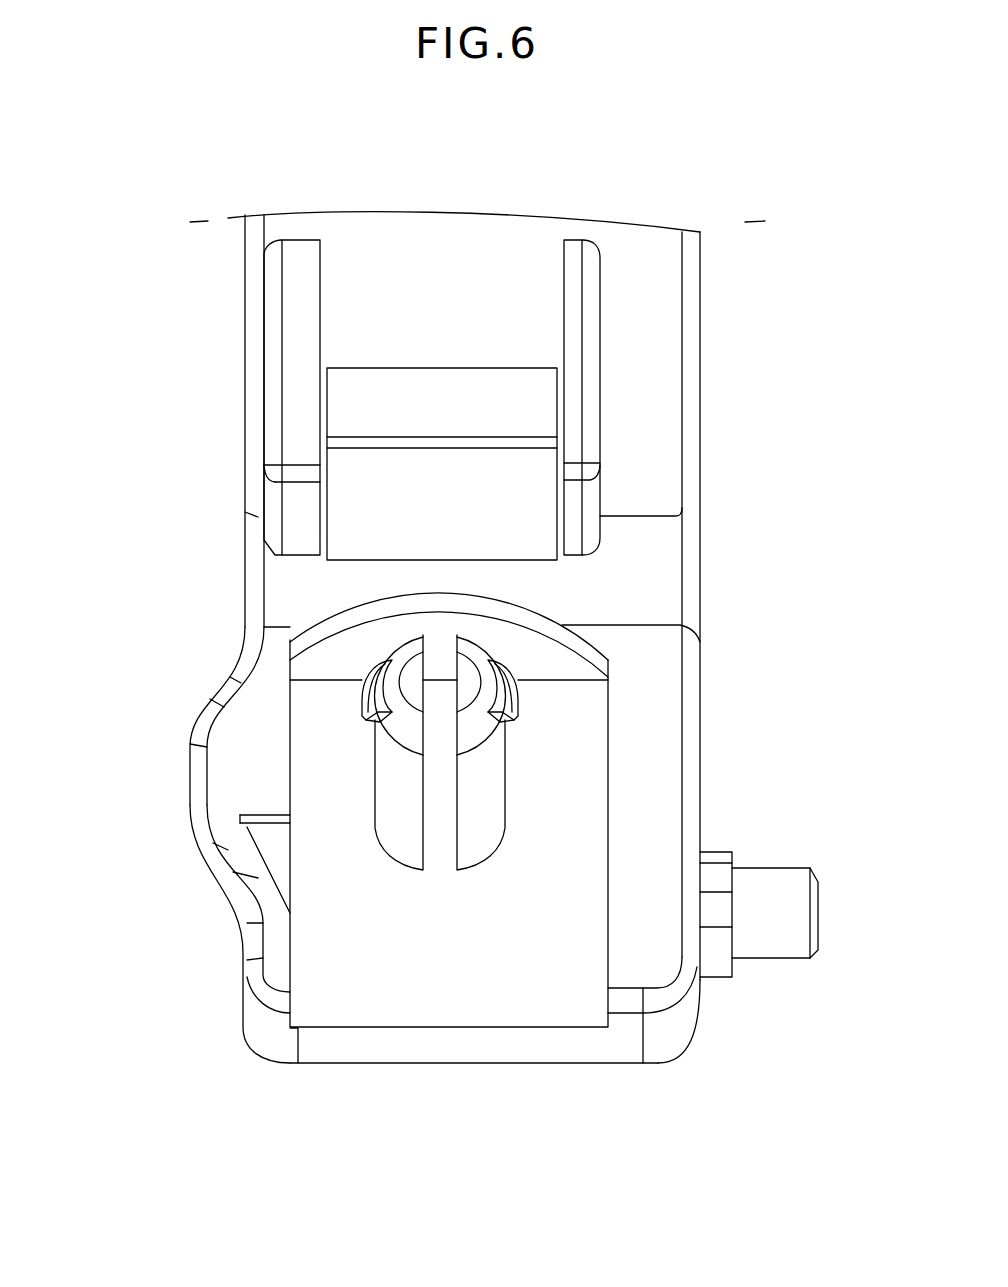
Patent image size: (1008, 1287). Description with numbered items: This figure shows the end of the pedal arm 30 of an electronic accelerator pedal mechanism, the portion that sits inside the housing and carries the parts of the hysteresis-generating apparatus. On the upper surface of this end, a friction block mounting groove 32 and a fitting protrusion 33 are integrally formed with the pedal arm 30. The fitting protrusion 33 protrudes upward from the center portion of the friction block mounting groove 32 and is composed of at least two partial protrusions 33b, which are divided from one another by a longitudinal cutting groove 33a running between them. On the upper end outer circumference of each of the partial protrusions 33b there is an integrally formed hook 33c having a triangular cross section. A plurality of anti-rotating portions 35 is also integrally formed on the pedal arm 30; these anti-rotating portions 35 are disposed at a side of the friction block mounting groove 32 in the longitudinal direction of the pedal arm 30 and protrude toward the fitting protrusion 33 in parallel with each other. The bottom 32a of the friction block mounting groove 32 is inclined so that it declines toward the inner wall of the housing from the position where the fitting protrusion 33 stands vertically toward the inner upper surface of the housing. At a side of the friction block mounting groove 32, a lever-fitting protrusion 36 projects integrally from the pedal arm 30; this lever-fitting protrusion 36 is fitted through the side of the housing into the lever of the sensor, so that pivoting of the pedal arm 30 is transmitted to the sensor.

The pedal arm 30 is at (727, 387).
The friction block mounting groove 32 is at (354, 874).
The bottom of friction block mounting groove 32a is at (343, 940).
The fitting protrusion 33 is at (464, 926).
The longitudinal cutting groove 33a is at (457, 780).
The partial protrusions 33b is at (402, 843).
The hook 33c is at (362, 690).
The anti-rotating portions 35 is at (297, 348).
The lever-fitting protrusion 36 is at (772, 942).